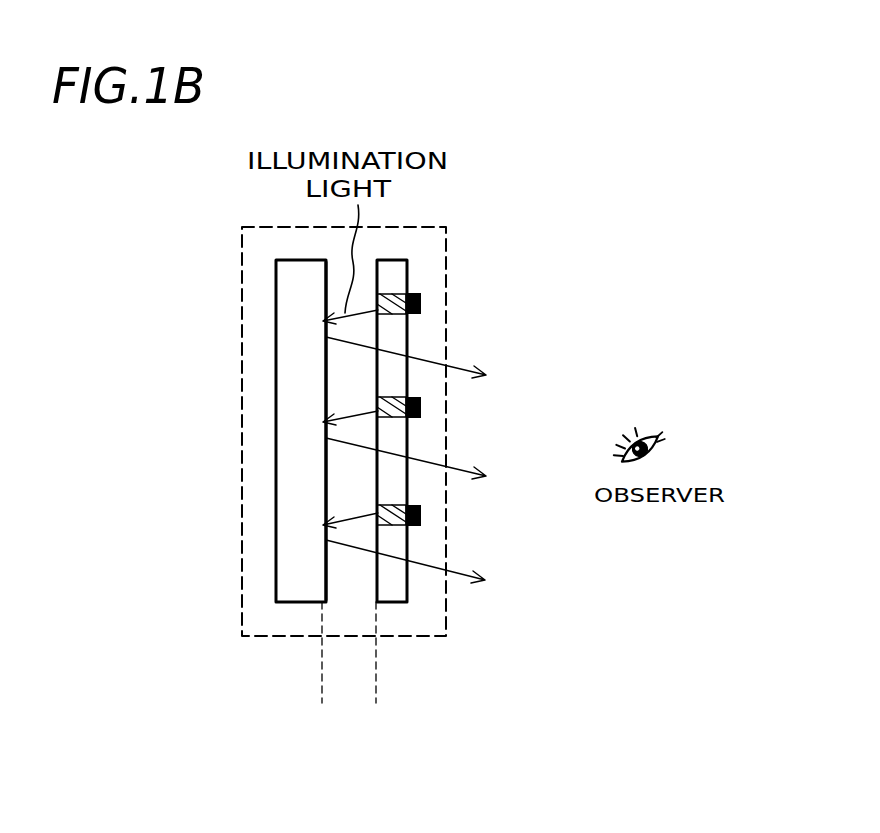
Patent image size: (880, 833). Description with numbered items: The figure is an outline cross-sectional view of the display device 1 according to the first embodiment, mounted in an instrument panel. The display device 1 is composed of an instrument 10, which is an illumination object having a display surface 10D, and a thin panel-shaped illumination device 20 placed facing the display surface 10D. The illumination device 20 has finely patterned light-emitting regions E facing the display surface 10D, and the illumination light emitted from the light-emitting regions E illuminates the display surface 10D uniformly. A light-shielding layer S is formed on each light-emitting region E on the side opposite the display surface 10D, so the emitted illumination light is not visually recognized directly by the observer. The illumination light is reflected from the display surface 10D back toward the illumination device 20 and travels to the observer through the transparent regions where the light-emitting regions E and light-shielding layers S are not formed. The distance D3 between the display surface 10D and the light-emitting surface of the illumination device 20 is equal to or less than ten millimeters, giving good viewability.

The display device 1 is at (461, 206).
The instrument 10 is at (284, 433).
The display surface 10D is at (323, 565).
The illumination device 20 is at (400, 273).
The light-shielding layer S is at (421, 303).
The light-emitting regions E is at (395, 318).
The distance D3 is at (365, 688).